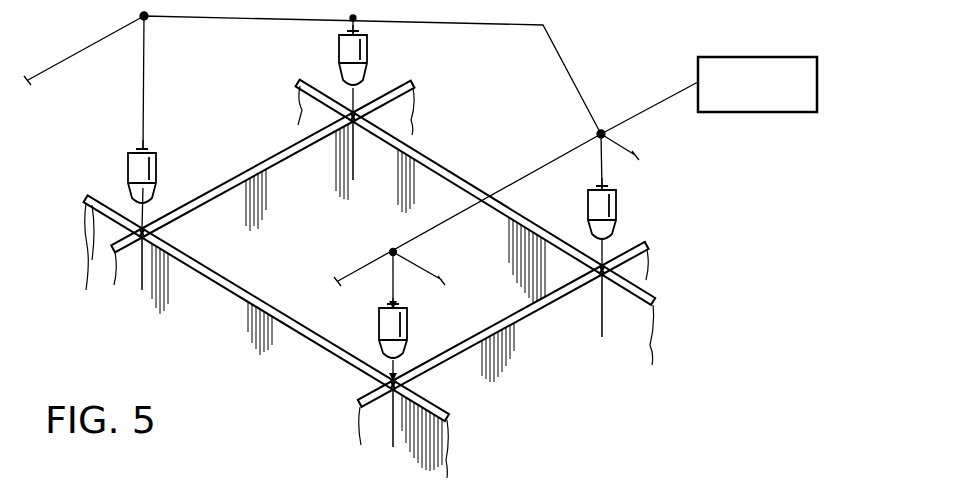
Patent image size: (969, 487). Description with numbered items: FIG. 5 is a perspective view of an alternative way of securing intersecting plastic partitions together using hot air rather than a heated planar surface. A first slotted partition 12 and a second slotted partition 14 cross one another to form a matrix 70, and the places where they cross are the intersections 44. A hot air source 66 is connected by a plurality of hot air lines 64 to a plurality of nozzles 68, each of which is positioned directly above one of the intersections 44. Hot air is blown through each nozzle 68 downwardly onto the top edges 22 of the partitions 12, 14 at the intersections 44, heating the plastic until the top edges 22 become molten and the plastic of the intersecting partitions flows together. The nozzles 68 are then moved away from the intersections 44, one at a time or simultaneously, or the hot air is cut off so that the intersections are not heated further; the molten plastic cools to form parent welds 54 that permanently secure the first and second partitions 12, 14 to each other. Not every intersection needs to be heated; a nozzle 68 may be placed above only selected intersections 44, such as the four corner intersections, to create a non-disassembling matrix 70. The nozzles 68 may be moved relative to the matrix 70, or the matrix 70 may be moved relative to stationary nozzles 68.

The first slotted partition 12 is at (441, 402).
The second slotted partition 14 is at (512, 313).
The top edges 22 is at (259, 166).
The intersections 44 is at (384, 119).
The parent welds 54 is at (340, 98).
The hot air lines 64 is at (632, 115).
The hot air source 66 is at (768, 57).
The nozzles 68 is at (369, 54).
The matrix 70 is at (174, 328).